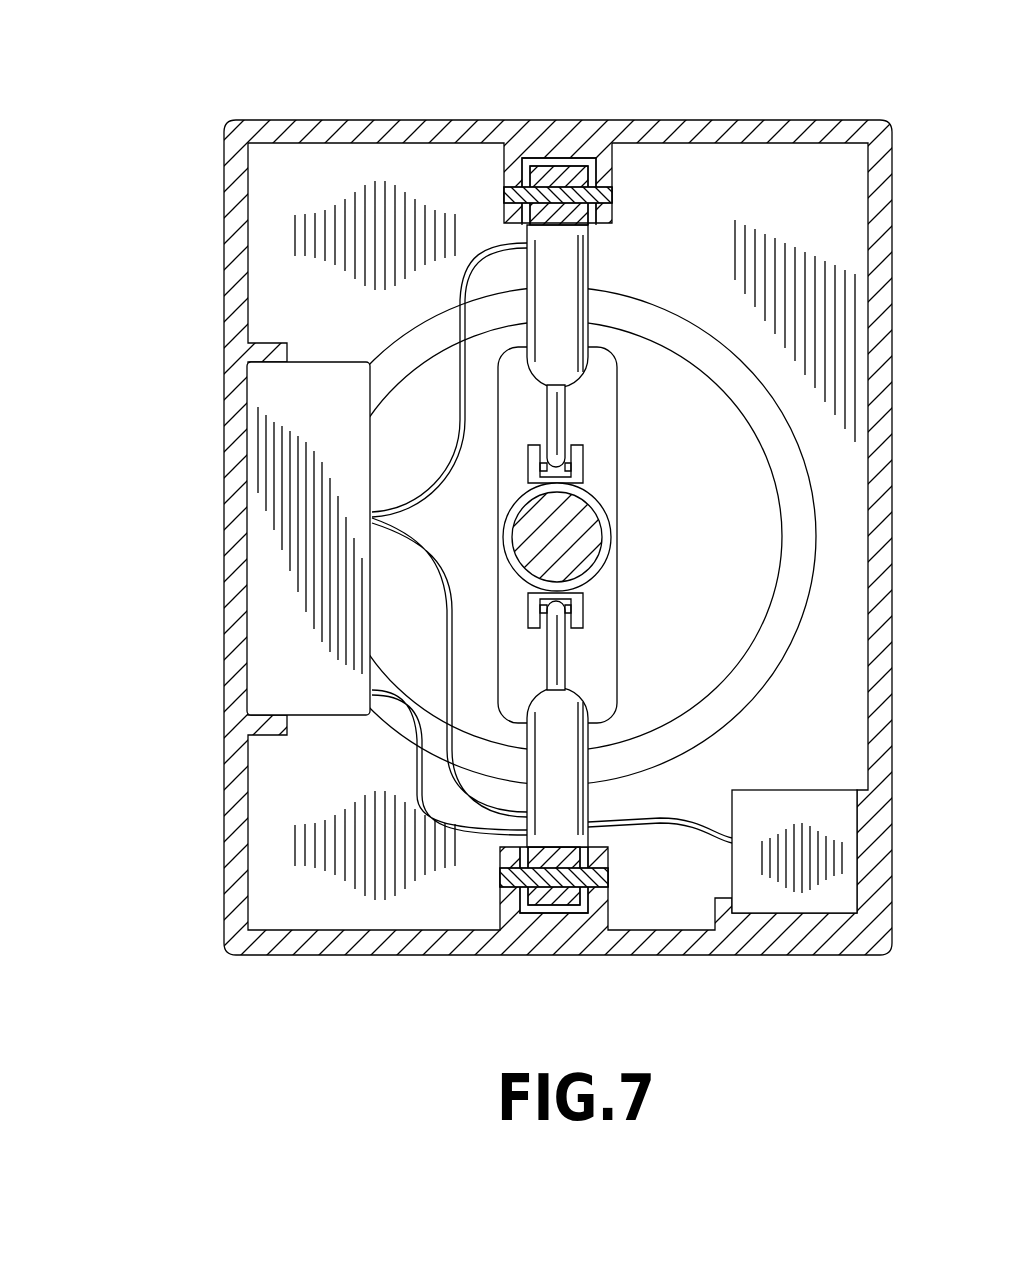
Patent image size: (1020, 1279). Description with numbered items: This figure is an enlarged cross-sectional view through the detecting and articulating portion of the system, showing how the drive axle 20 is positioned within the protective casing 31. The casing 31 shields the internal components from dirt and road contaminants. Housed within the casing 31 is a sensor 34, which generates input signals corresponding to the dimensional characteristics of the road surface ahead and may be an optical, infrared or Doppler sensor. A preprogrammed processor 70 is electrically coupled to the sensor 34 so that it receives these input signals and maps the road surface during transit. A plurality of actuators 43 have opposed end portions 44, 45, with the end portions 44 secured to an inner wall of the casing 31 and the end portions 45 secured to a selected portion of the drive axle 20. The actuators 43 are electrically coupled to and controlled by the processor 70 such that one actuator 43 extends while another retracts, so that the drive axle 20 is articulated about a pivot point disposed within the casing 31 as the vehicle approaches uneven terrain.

The protective casing 31 is at (360, 120).
The end portion of actuator 44 is at (612, 196).
The actuators 43 is at (560, 318).
The end portion of actuator 45 is at (578, 453).
The drive axle 20 is at (580, 541).
The preprogrammed processor 70 is at (273, 600).
The sensor 34 is at (790, 928).